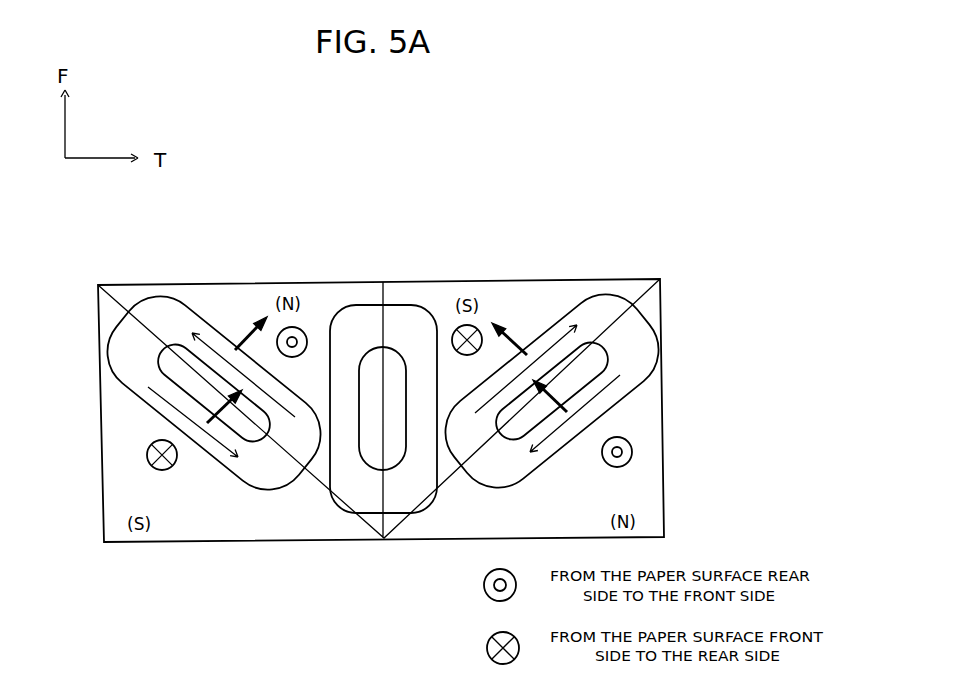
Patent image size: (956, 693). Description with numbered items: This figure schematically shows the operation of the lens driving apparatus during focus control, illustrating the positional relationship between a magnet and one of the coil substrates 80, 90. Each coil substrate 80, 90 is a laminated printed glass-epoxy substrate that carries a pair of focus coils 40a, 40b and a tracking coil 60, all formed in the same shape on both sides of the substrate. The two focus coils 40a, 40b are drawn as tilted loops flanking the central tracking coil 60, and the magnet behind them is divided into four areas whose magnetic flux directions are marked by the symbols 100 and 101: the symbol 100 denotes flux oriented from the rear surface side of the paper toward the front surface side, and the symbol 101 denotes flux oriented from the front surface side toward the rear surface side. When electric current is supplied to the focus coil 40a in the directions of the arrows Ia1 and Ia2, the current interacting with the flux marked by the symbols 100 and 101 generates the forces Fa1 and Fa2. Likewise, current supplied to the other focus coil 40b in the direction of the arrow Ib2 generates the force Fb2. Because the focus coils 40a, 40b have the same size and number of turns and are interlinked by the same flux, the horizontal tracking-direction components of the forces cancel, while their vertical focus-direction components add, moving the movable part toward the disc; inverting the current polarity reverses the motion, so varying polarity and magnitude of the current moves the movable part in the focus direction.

The coil substrate 80 is at (346, 189).
The coil substrate 90 is at (381, 410).
The tracking coil 60 is at (400, 328).
The focus coil 40a is at (128, 362).
The focus coil 40b is at (634, 348).
The magnetic flux direction symbol 100 is at (305, 340).
The magnetic flux direction symbol 101 is at (162, 470).
The electric current direction arrow Ia1 is at (203, 342).
The electric current direction arrow Ia2 is at (167, 403).
The electric current direction arrow Ib2 is at (580, 330).
The force Fa1 is at (247, 332).
The force Fa2 is at (233, 412).
The force Fb2 is at (512, 338).